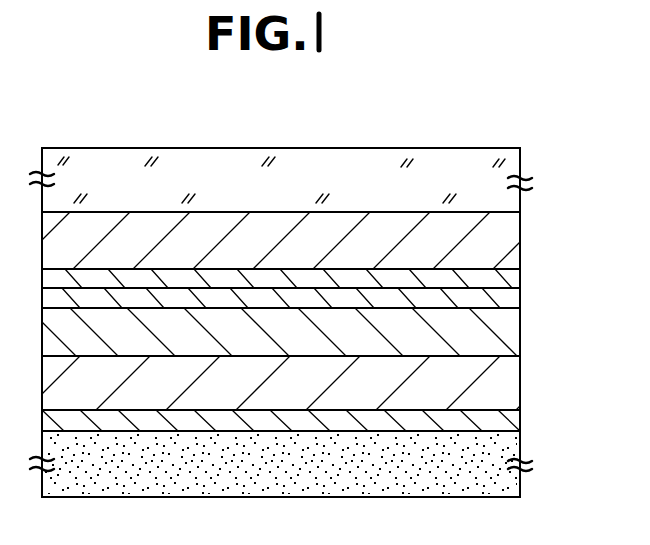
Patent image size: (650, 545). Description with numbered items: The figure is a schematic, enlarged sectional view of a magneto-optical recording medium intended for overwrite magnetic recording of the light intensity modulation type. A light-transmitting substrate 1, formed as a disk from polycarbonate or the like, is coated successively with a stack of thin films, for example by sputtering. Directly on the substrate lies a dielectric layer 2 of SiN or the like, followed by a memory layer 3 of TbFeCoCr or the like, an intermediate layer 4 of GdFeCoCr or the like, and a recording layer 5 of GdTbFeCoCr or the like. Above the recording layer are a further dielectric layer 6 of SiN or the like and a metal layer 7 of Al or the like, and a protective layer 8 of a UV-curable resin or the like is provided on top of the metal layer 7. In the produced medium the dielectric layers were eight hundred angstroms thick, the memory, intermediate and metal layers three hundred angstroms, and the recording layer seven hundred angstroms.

The light-transmitting substrate 1 is at (523, 165).
The dielectric layer 2 is at (510, 233).
The memory layer 3 is at (513, 278).
The intermediate layer 4 is at (512, 298).
The recording layer 5 is at (513, 328).
The dielectric layer 6 is at (510, 375).
The metal layer 7 is at (513, 421).
The protective layer 8 is at (510, 480).